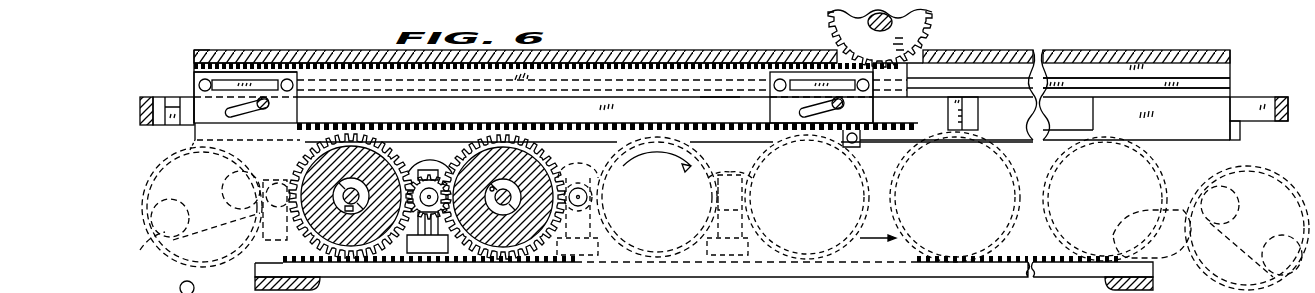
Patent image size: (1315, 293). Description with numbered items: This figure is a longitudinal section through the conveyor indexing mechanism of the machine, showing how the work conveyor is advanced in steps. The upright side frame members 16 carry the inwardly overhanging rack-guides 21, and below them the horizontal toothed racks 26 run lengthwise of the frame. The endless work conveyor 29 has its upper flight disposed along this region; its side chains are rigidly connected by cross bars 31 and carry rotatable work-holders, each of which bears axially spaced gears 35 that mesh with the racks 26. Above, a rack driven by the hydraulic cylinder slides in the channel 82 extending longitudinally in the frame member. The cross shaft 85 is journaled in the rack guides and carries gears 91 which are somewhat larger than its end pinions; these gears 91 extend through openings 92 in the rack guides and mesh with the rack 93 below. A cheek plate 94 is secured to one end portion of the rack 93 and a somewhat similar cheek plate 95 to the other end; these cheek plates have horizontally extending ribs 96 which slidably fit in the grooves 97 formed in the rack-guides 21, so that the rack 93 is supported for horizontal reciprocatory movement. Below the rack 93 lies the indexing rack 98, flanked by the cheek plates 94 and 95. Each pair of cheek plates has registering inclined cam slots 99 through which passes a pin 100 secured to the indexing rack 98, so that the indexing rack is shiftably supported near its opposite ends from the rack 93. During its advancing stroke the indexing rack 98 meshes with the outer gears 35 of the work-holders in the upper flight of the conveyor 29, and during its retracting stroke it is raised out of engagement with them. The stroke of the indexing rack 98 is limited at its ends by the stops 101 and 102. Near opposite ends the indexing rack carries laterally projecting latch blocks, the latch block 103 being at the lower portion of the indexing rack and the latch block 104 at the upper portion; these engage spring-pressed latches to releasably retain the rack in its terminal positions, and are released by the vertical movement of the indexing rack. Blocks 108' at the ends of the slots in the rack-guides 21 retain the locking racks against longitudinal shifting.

The side frame member 16 is at (204, 25).
The rack-guide 21 is at (1195, 49).
The toothed rack 26 is at (390, 265).
The endless work conveyor 29 is at (659, 242).
The cross bar 31 is at (430, 253).
The gear 35 is at (358, 250).
The channel 82 is at (720, 48).
The cross shaft 85 is at (868, 25).
The gear 91 is at (928, 28).
The opening 92 is at (928, 58).
The rack 93 is at (630, 70).
The cheek plate 94 is at (200, 78).
The cheek plate 95 is at (770, 110).
The rib 96 is at (803, 73).
The groove 97 is at (1086, 86).
The indexing rack 98 is at (360, 105).
The cam slot 99 is at (237, 117).
The pin 100 is at (265, 109).
The stop 101 is at (142, 97).
The stop 102 is at (1284, 97).
The latch block 103 is at (172, 122).
The latch block 104 is at (949, 108).
The block 108' is at (730, 150).